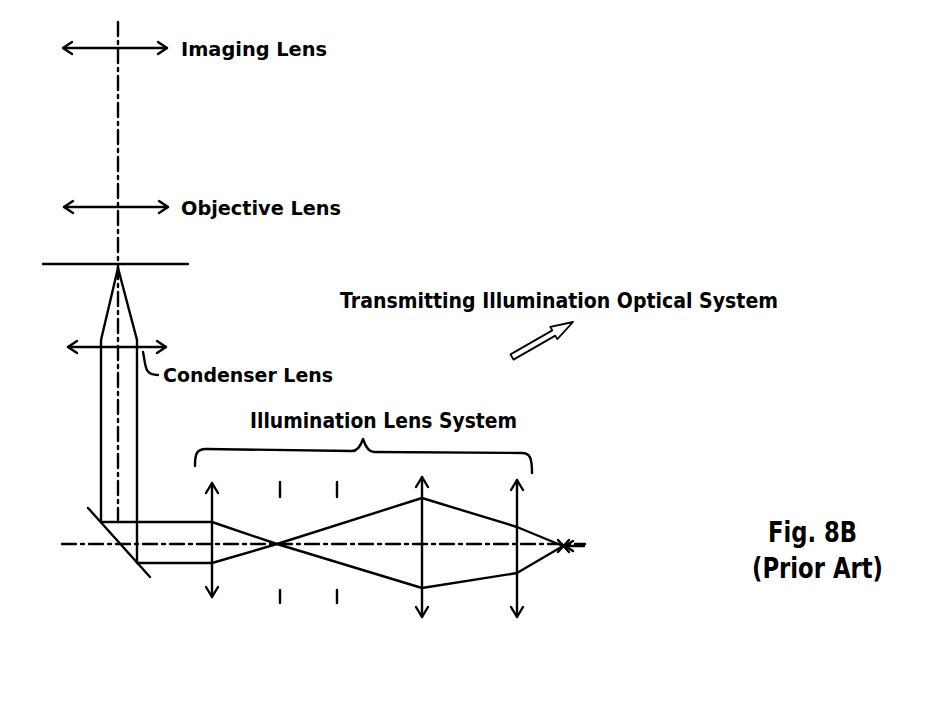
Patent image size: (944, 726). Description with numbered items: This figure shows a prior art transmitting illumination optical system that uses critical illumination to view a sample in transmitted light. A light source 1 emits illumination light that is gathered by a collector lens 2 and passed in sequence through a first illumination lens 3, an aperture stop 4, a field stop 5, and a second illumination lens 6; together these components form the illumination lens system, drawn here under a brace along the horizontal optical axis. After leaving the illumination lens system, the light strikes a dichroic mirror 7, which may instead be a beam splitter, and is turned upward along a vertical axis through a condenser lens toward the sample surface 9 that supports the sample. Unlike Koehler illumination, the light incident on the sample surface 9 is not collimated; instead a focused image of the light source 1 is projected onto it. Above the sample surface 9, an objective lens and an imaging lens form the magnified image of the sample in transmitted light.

The light source 1 is at (565, 555).
The collector lens 2 is at (513, 592).
The first illumination lens 3 is at (417, 592).
The aperture stop 4 is at (338, 593).
The field stop 5 is at (282, 598).
The second illumination lens 6 is at (202, 577).
The dichroic mirror 7 is at (99, 545).
The sample surface 9 is at (151, 266).